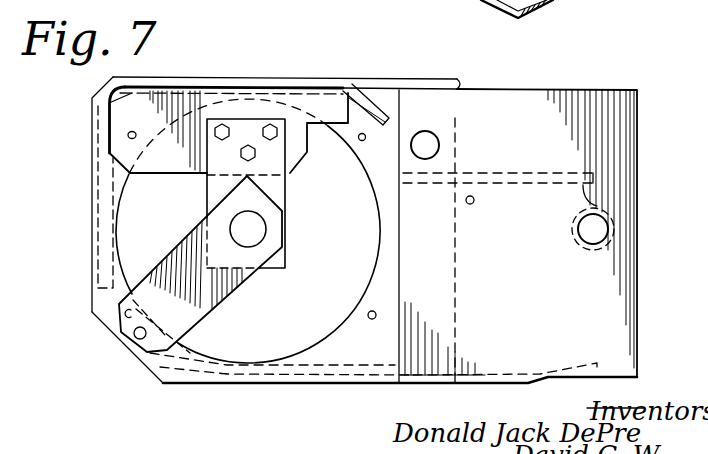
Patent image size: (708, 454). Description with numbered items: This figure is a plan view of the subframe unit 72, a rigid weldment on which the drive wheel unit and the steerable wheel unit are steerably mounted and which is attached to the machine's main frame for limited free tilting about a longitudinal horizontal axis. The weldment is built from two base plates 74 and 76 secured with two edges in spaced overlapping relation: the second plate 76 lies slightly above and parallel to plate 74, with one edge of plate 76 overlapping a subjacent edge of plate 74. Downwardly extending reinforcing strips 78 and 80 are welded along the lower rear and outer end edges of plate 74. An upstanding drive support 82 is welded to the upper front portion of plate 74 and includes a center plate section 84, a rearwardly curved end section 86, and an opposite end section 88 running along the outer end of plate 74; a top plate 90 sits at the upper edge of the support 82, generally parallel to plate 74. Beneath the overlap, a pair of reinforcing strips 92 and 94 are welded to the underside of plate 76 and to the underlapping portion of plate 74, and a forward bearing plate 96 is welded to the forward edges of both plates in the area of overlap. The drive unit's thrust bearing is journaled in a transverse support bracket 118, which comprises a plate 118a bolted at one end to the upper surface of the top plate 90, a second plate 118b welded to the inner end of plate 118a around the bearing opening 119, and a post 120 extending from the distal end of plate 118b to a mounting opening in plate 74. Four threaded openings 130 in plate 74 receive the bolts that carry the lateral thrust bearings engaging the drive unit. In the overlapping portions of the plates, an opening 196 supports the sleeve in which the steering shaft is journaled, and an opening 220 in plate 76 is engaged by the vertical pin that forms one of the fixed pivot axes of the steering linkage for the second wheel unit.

The subframe unit 72 is at (262, 386).
The base plate 74 is at (173, 386).
The base plate 76 is at (640, 118).
The reinforcing strip 78 is at (318, 380).
The reinforcing strip 80 is at (100, 250).
The drive support 82 is at (243, 75).
The center plate section 84 is at (180, 88).
The rearwardly curved end section 86 is at (362, 85).
The opposite end section 88 is at (105, 124).
The top plate 90 is at (133, 110).
The reinforcing strip 92 is at (510, 336).
The reinforcing strip 94 is at (608, 196).
The forward bearing plate 96 is at (425, 80).
The transverse support bracket 118 is at (285, 209).
The plate 118a is at (270, 183).
The second plate 118b is at (250, 282).
The bearing opening 119 is at (257, 230).
The post 120 is at (128, 345).
The threaded openings 130 is at (362, 133).
The opening 196 is at (443, 135).
The opening 220 is at (470, 204).